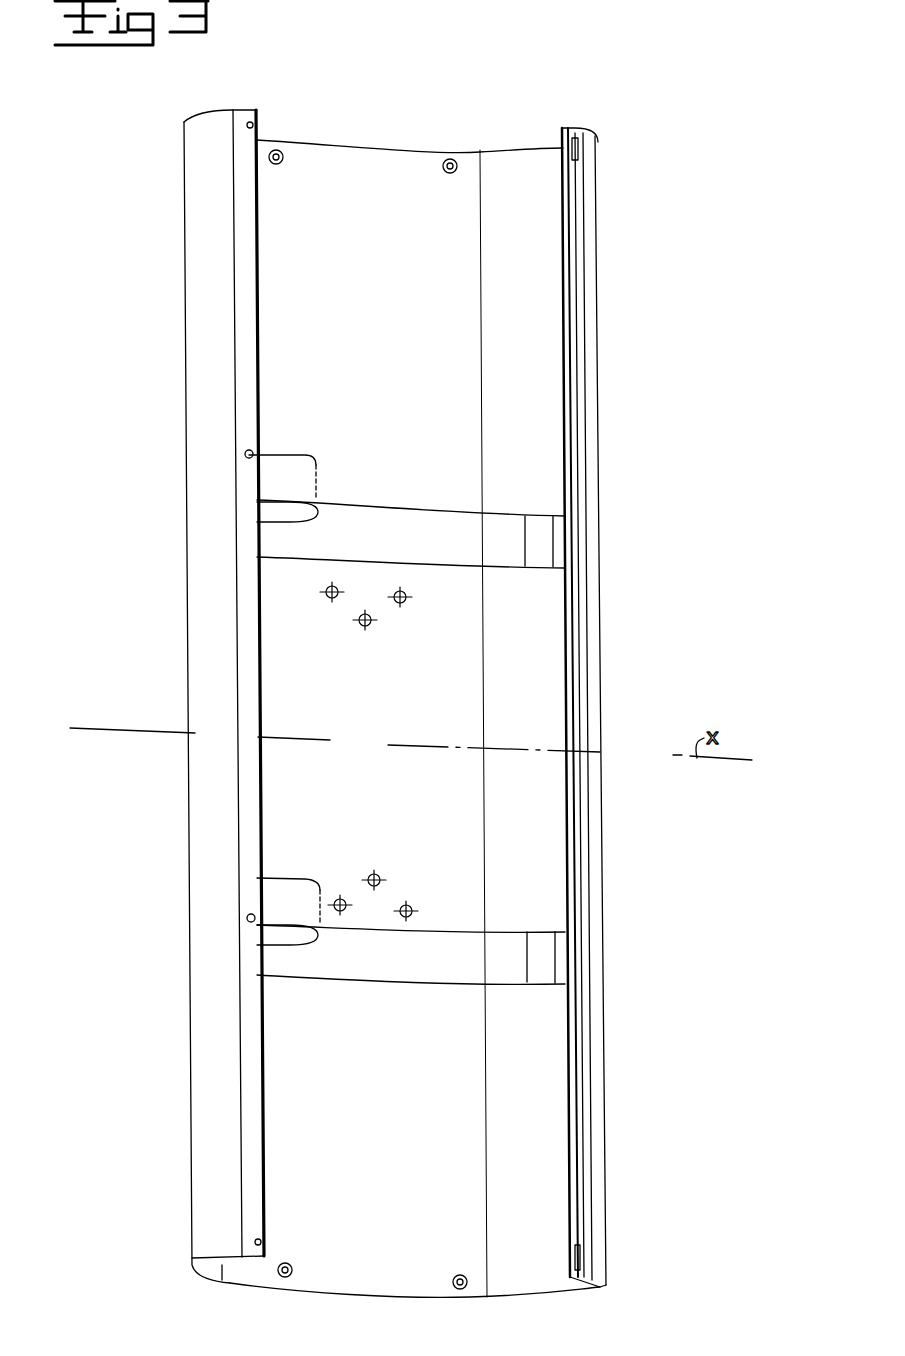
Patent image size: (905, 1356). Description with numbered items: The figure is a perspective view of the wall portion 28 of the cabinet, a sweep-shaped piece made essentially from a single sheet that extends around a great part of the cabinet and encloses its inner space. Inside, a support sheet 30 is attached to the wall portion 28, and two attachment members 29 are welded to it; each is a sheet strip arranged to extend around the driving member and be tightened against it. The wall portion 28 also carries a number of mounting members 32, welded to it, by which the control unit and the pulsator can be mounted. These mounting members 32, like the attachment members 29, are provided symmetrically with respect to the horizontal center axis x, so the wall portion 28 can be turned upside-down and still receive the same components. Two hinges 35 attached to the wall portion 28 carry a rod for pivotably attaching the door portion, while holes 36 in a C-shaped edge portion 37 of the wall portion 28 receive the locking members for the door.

The wall portion 28 is at (205, 882).
The attachment members 29 is at (290, 893).
The support sheet 30 is at (505, 945).
The mounting members 32 is at (400, 605).
The hinges 35 is at (575, 128).
The holes 36 is at (245, 455).
The C-shaped edge portion 37 is at (570, 362).